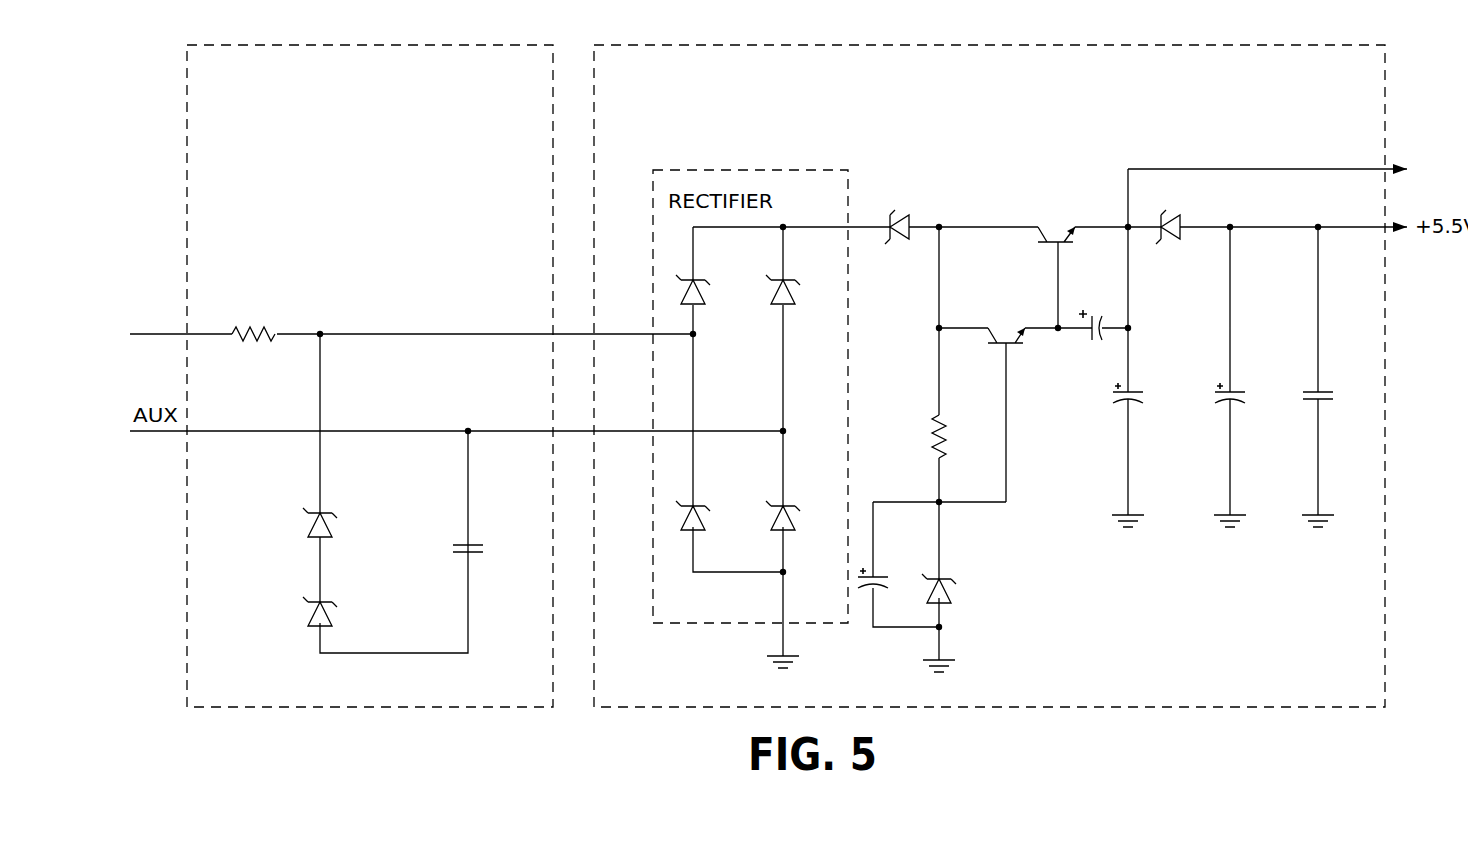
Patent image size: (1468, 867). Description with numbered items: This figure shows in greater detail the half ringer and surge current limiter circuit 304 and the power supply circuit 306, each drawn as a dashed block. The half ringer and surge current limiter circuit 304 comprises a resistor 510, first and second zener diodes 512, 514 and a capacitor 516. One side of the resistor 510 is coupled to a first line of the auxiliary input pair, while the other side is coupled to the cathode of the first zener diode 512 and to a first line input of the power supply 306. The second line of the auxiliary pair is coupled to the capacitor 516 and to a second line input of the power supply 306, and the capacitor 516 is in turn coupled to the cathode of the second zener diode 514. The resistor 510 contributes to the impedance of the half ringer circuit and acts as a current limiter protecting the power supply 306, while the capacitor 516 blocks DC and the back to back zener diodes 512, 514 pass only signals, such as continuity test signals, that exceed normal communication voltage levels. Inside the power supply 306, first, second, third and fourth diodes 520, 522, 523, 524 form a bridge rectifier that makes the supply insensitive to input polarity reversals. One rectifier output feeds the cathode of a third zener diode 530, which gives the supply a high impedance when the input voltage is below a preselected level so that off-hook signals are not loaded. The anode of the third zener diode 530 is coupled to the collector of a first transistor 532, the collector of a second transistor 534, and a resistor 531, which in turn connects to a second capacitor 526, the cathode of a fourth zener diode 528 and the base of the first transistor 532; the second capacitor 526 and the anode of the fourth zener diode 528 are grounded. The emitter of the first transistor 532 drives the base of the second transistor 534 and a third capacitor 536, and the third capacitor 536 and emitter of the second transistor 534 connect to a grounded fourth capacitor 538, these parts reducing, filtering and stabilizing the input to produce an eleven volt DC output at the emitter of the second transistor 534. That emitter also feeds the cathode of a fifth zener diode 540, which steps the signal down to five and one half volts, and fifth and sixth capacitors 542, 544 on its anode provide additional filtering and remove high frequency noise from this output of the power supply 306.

The half ringer and surge current limiter circuit 304 is at (483, 45).
The power supply circuit 306 is at (1305, 43).
The resistor 510 is at (272, 330).
The first zener diode 512 is at (325, 513).
The second zener diode 514 is at (325, 602).
The capacitor 516 is at (474, 545).
The first diode 520 is at (698, 280).
The second diode 522 is at (788, 280).
The third diode 523 is at (698, 506).
The fourth diode 524 is at (788, 506).
The second capacitor 526 is at (878, 577).
The fourth zener diode 528 is at (944, 579).
The third zener diode 530 is at (900, 218).
The resistor 531 is at (943, 418).
The first transistor 532 is at (994, 328).
The second transistor 534 is at (1042, 226).
The third capacitor 536 is at (1106, 341).
The fourth capacitor 538 is at (1133, 392).
The fifth zener diode 540 is at (1183, 240).
The fifth capacitor 542 is at (1235, 392).
The sixth capacitor 544 is at (1323, 392).